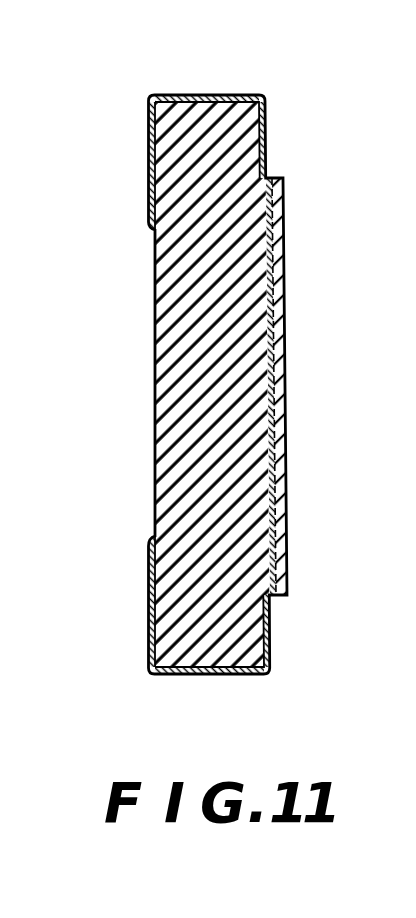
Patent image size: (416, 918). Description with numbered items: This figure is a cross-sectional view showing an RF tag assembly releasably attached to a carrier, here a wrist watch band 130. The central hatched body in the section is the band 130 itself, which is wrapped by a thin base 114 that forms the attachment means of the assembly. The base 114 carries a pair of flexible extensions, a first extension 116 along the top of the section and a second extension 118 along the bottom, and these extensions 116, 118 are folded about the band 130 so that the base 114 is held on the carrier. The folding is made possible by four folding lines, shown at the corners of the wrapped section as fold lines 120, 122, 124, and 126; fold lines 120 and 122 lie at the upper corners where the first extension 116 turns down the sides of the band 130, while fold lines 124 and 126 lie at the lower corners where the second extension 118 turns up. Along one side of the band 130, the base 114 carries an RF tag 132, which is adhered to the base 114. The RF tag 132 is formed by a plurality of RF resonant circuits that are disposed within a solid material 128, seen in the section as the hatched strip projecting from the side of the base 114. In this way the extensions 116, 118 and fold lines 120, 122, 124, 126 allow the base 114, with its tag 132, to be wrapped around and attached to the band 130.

The base 114 is at (267, 142).
The first extension 116 is at (193, 96).
The second extension 118 is at (222, 677).
The fold line 120 is at (265, 97).
The fold line 122 is at (149, 97).
The fold line 124 is at (269, 675).
The fold line 126 is at (158, 675).
The solid material 128 is at (283, 252).
The wrist watch band 130 is at (178, 357).
The RF tag 132 is at (281, 379).